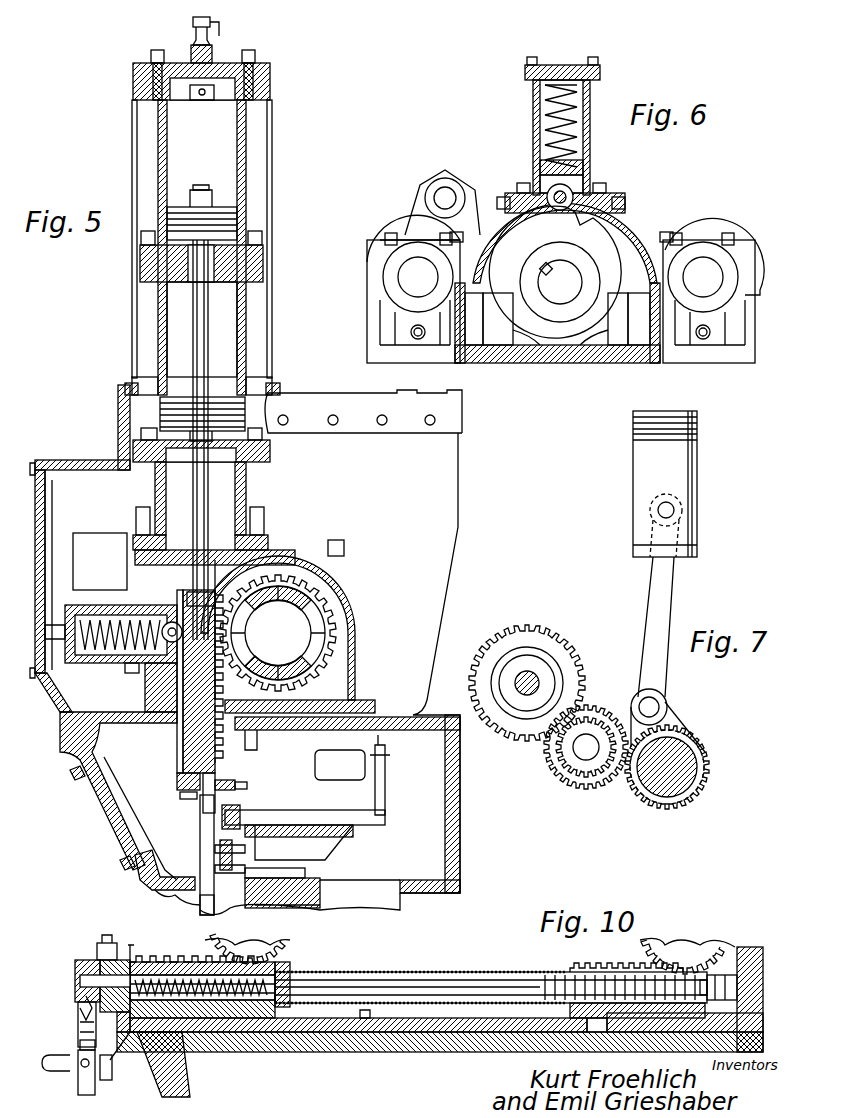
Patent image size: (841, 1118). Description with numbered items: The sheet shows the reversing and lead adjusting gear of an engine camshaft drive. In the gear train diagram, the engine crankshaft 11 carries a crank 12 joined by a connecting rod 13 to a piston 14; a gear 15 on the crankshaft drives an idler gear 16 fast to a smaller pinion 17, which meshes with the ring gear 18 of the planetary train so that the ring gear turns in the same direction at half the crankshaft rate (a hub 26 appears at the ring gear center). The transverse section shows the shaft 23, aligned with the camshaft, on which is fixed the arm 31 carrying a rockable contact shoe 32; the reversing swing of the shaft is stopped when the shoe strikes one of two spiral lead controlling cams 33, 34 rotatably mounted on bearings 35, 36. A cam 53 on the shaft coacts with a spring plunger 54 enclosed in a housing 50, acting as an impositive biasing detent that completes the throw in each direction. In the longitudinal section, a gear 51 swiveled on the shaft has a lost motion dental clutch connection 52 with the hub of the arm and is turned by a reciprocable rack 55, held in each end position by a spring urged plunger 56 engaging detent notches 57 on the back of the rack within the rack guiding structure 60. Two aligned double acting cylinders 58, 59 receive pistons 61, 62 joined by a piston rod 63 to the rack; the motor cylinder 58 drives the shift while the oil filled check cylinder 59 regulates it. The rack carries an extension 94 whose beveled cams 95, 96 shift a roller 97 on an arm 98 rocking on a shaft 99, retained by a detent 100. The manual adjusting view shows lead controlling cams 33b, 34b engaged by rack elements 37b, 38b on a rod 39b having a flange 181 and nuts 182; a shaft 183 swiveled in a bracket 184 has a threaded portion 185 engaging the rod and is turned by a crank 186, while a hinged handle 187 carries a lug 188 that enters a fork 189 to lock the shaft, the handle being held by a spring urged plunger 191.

In FIG. 5, the motor cylinder 58 is at (236, 132).
In FIG. 5, the piston 61 is at (178, 207).
In FIG. 5, the check cylinder 59 is at (226, 326).
In FIG. 5, the piston 62 is at (230, 410).
In FIG. 5, the piston rod 63 is at (205, 490).
In FIG. 5, the rack guiding structure 60 is at (127, 582).
In FIG. 5, the spring urged plunger 56 is at (152, 678).
In FIG. 5, the detent notches 57 is at (178, 600).
In FIG. 5, the reciprocable rack 55 is at (185, 766).
In FIG. 5, the lost motion dental clutch connection 52 is at (325, 617).
In FIG. 5, the gear 51 is at (350, 664).
In FIG. 5, the arm 98 is at (235, 796).
In FIG. 5, the roller 97 is at (200, 798).
In FIG. 5, the beveled cam 96 is at (205, 815).
In FIG. 5, the shaft 99 is at (302, 820).
In FIG. 5, the extension 94 is at (200, 851).
In FIG. 5, the beveled cam 95 is at (214, 905).
In FIG. 5, the detent 100 is at (285, 892).
In FIG. 6, the housing 50 is at (535, 140).
In FIG. 6, the arm 31 is at (485, 210).
In FIG. 6, the spring plunger 54 is at (575, 188).
In FIG. 6, the rockable contact shoe 32 is at (423, 198).
In FIG. 6, the lead controlling cam 33 is at (405, 228).
In FIG. 6, the bearing 35 is at (395, 290).
In FIG. 6, the bearing 36 is at (705, 250).
In FIG. 6, the lead controlling cam 34 is at (752, 250).
In FIG. 6, the cam 53 is at (555, 272).
In FIG. 6, the shaft 23 is at (572, 266).
In FIG. 7, the shaft 23 is at (527, 675).
In FIG. 7, the piston 14 is at (640, 475).
In FIG. 7, the connecting rod 13 is at (672, 590).
In FIG. 7, the crank 12 is at (672, 720).
In FIG. 7, the ring gear 18 is at (555, 645).
In FIG. 7, the hub 26 is at (513, 655).
In FIG. 7, the idler gear 16 is at (583, 788).
In FIG. 7, the pinion 17 is at (570, 770).
In FIG. 7, the gear 15 is at (672, 800).
In FIG. 7, the engine crankshaft 11 is at (690, 750).
In FIG. 10, the rod 39b is at (458, 975).
In FIG. 10, the rack element 38b is at (572, 968).
In FIG. 10, the lead controlling cam 34b is at (725, 945).
In FIG. 10, the nuts 182 is at (763, 1007).
In FIG. 10, the rack element 37b is at (280, 968).
In FIG. 10, the lead controlling cam 33b is at (290, 955).
In FIG. 10, the threaded portion 185 is at (207, 1003).
In FIG. 10, the flange 181 is at (131, 958).
In FIG. 10, the bracket 184 is at (110, 942).
In FIG. 10, the shaft 183 is at (76, 978).
In FIG. 10, the crank 186 is at (78, 1025).
In FIG. 10, the spring urged plunger 191 is at (78, 1042).
In FIG. 10, the handle 187 is at (48, 1065).
In FIG. 10, the lug 188 is at (87, 1093).
In FIG. 10, the fork 189 is at (108, 1075).